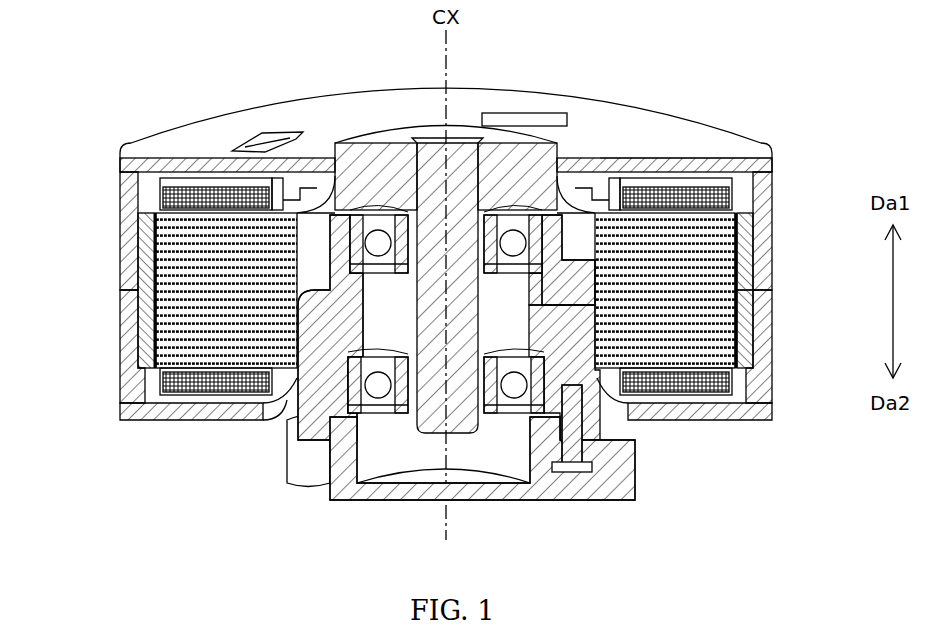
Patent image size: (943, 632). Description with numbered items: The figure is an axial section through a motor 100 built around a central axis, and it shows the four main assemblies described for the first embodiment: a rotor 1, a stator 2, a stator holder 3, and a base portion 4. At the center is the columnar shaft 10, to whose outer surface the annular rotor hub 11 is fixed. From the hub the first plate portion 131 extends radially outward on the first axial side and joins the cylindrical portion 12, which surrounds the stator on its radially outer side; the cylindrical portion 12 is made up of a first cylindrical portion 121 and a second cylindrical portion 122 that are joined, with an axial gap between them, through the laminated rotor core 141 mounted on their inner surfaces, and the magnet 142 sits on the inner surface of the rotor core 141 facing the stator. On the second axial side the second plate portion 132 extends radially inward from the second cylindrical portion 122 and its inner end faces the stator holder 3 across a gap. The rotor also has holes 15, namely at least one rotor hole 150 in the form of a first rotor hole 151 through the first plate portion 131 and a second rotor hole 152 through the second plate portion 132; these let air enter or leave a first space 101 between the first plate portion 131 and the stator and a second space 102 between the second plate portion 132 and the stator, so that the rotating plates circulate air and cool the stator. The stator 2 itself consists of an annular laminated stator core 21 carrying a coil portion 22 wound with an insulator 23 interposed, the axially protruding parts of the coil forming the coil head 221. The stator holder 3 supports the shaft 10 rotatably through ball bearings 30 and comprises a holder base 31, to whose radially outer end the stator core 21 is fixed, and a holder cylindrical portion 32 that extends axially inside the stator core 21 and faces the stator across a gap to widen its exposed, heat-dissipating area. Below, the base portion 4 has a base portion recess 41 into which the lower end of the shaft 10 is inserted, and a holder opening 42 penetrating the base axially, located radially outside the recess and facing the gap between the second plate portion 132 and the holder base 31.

The motor 100 is at (220, 57).
The rotor 1 is at (400, 253).
The first space 101 is at (209, 166).
The second space 102 is at (190, 410).
The cylindrical portion 12 is at (400, 287).
The first cylindrical portion 121 is at (120, 193).
The second cylindrical portion 122 is at (412, 346).
The first plate portion 131 is at (630, 163).
The second plate portion 132 is at (682, 406).
The rotor core 141 is at (760, 302).
The magnet 142 is at (744, 275).
The holes 15 is at (543, 83).
The rotor hole 150 is at (501, 104).
The first rotor hole 151 is at (526, 104).
The second rotor hole 152 is at (643, 404).
The stator 2 is at (772, 165).
The stator core 21 is at (710, 251).
The coil portion 22 is at (748, 198).
The coil head 221 is at (681, 175).
The insulator 23 is at (750, 226).
The stator holder 3 is at (576, 248).
The bearing 30 is at (355, 212).
The holder base 31 is at (575, 338).
The holder cylindrical portion 32 is at (600, 272).
The shaft 10 is at (415, 140).
The rotor hub 11 is at (385, 143).
The base portion 4 is at (482, 488).
The base portion recess 41 is at (412, 486).
The holder opening 42 is at (304, 483).